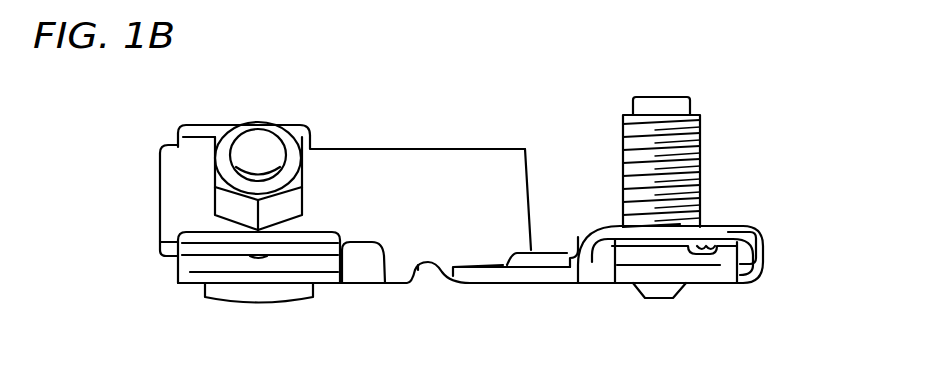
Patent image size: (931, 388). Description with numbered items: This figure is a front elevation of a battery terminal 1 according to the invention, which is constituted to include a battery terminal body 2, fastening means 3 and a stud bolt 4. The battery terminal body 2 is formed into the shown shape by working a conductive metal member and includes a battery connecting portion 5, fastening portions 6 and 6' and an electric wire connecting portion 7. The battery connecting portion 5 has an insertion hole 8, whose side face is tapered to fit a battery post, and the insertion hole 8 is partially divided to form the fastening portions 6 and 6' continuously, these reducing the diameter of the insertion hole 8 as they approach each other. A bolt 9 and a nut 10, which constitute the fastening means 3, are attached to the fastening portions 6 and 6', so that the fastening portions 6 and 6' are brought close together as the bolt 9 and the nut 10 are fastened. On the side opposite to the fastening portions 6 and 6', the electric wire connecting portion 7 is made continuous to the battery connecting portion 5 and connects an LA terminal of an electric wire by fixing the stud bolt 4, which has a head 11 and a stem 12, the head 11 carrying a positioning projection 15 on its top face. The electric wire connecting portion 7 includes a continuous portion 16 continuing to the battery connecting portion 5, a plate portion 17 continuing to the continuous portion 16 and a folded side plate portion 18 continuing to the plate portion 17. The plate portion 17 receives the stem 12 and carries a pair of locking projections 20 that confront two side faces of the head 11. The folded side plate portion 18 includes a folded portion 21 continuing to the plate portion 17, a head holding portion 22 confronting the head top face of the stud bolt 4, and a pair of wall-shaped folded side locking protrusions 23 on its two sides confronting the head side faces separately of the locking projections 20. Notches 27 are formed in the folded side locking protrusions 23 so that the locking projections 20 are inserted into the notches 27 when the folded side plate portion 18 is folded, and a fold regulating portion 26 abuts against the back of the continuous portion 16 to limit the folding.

The battery terminal 1 is at (412, 118).
The battery terminal body 2 is at (338, 148).
The fastening means 3 is at (272, 122).
The stud bolt 4 is at (673, 92).
The battery connecting portion 5 is at (437, 248).
The fastening portion 6 is at (247, 296).
The fastening portion 6' is at (138, 190).
The electric wire connecting portion 7 is at (587, 227).
The insertion hole 8 is at (453, 170).
The bolt 9 is at (258, 148).
The nut 10 is at (273, 216).
The head 11 is at (610, 255).
The stem 12 is at (697, 143).
The positioning projection 15 is at (665, 292).
The continuous portion 16 is at (530, 284).
The plate portion 17 is at (713, 228).
The folded side plate portion 18 is at (727, 283).
The locking projection 20 is at (757, 262).
The folded portion 21 is at (762, 240).
The head holding portion 22 is at (625, 283).
The folded side locking protrusion 23 is at (637, 250).
The fold regulating portion 26 is at (590, 268).
The notch 27 is at (697, 256).